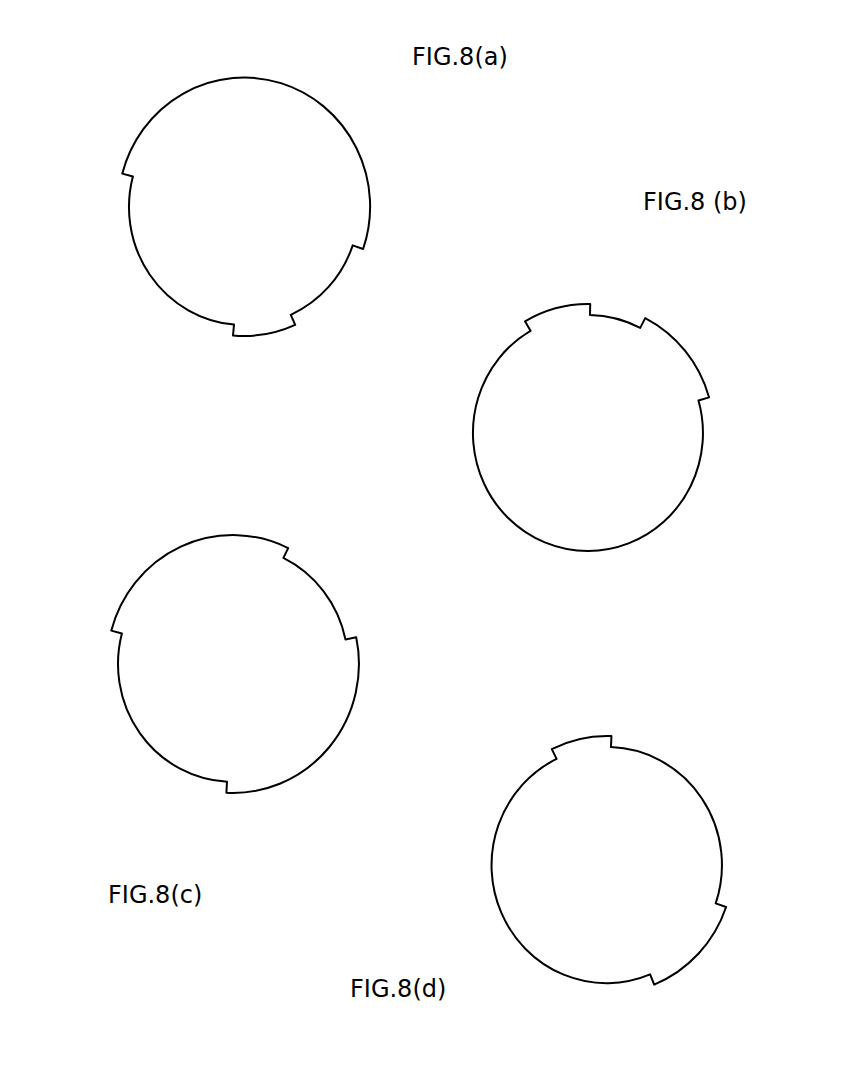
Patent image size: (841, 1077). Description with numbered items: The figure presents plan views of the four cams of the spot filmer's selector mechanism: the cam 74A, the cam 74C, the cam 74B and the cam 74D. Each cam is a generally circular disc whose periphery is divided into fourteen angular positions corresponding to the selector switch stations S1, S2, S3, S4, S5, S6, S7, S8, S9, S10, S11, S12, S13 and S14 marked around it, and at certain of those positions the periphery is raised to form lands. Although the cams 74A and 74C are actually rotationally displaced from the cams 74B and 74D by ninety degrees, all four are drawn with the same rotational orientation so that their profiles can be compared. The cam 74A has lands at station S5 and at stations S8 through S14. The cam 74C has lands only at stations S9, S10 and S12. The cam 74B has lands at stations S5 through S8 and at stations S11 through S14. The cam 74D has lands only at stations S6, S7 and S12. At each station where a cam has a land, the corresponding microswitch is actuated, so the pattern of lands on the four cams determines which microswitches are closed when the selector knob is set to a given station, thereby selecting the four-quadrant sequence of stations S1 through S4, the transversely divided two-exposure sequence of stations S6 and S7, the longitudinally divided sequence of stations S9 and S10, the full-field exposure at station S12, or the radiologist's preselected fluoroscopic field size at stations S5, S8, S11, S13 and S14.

In FIG. 8A, the cam 74A is at (225, 212).
In FIG. 8C, the cam 74B is at (213, 666).
In FIG. 8B, the cam 74C is at (573, 434).
In FIG. 8D, the cam 74D is at (587, 871).
In FIG. 8A, the station S1 is at (97, 210).
In FIG. 8C, the station S1 is at (87, 661).
In FIG. 8B, the station S1 is at (445, 432).
In FIG. 8D, the station S1 is at (463, 863).
In FIG. 8A, the station S2 is at (112, 273).
In FIG. 8C, the station S2 is at (100, 727).
In FIG. 8B, the station S2 is at (455, 493).
In FIG. 8D, the station S2 is at (477, 927).
In FIG. 8A, the station S3 is at (153, 323).
In FIG. 8C, the station S3 is at (142, 777).
In FIG. 8B, the station S3 is at (495, 548).
In FIG. 8D, the station S3 is at (513, 980).
In FIG. 8A, the station S4 is at (210, 355).
In FIG. 8C, the station S4 is at (197, 808).
In FIG. 8B, the station S4 is at (553, 578).
In FIG. 8D, the station S4 is at (573, 1012).
In FIG. 8A, the station S5 is at (275, 352).
In FIG. 8C, the station S5 is at (267, 808).
In FIG. 8B, the station S5 is at (620, 577).
In FIG. 8D, the station S5 is at (637, 1012).
In FIG. 8A, the station S6 is at (328, 323).
In FIG. 8C, the station S6 is at (323, 780).
In FIG. 8B, the station S6 is at (680, 547).
In FIG. 8D, the station S6 is at (693, 982).
In FIG. 8A, the station S7 is at (372, 275).
In FIG. 8C, the station S7 is at (362, 727).
In FIG. 8B, the station S7 is at (720, 495).
In FIG. 8D, the station S7 is at (738, 932).
In FIG. 8A, the station S8 is at (387, 212).
In FIG. 8C, the station S8 is at (378, 663).
In FIG. 8B, the station S8 is at (735, 432).
In FIG. 8D, the station S8 is at (753, 864).
In FIG. 8A, the station S9 is at (368, 150).
In FIG. 8C, the station S9 is at (363, 598).
In FIG. 8B, the station S9 is at (718, 368).
In FIG. 8D, the station S9 is at (737, 802).
In FIG. 8A, the station S10 is at (328, 93).
In FIG. 8C, the station S10 is at (322, 547).
In FIG. 8B, the station S10 is at (678, 317).
In FIG. 8D, the station S10 is at (698, 750).
In FIG. 8A, the station S11 is at (267, 67).
In FIG. 8C, the station S11 is at (263, 518).
In FIG. 8B, the station S11 is at (620, 288).
In FIG. 8D, the station S11 is at (638, 720).
In FIG. 8A, the station S12 is at (210, 65).
In FIG. 8C, the station S12 is at (200, 517).
In FIG. 8B, the station S12 is at (557, 288).
In FIG. 8D, the station S12 is at (577, 720).
In FIG. 8A, the station S13 is at (152, 97).
In FIG. 8C, the station S13 is at (143, 547).
In FIG. 8B, the station S13 is at (498, 317).
In FIG. 8D, the station S13 is at (518, 750).
In FIG. 8A, the station S14 is at (115, 148).
In FIG. 8C, the station S14 is at (103, 598).
In FIG. 8B, the station S14 is at (457, 367).
In FIG. 8D, the station S14 is at (475, 798).